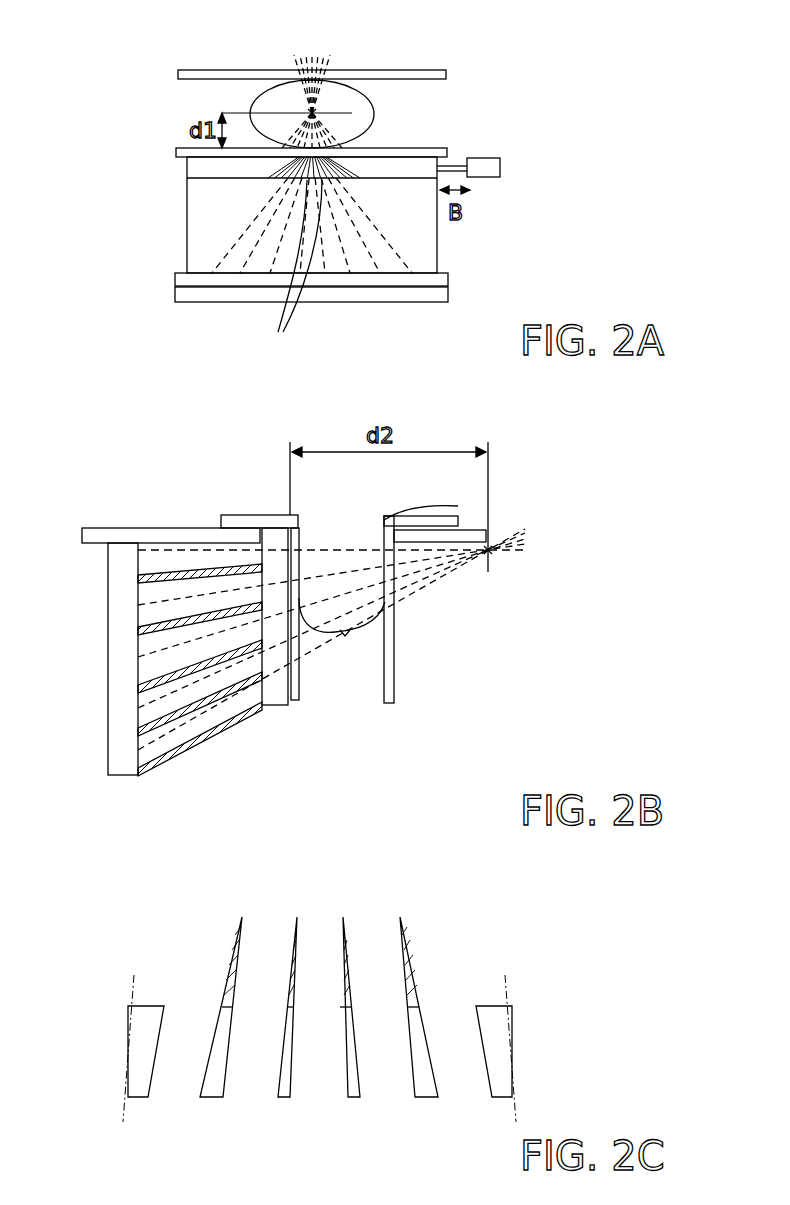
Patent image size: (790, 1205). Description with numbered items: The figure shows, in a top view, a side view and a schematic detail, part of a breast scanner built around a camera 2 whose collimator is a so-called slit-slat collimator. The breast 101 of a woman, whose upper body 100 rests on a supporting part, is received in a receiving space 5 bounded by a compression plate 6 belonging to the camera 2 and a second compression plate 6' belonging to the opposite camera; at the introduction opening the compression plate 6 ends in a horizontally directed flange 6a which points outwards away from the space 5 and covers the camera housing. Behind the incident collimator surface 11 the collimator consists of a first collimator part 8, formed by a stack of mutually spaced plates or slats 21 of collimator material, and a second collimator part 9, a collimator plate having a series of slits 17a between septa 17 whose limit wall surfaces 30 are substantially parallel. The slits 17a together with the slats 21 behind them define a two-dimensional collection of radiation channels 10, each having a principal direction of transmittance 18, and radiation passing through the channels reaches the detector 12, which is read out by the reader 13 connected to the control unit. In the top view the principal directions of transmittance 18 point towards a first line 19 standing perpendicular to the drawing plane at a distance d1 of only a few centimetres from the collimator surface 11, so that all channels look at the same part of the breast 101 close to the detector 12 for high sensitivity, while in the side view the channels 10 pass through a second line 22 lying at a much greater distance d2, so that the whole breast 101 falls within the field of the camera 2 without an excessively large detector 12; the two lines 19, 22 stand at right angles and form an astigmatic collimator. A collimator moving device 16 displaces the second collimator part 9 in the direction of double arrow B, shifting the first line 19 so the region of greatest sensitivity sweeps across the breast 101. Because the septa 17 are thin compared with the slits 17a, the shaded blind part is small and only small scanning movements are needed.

In FIG. 2A, the camera 2 is at (522, 246).
In FIG. 2B, the camera 2 is at (195, 458).
In FIG. 2A, the receiving space 5 is at (400, 125).
In FIG. 2B, the receiving space 5 is at (359, 695).
In FIG. 2A, the compression plate 6 is at (312, 126).
In FIG. 2B, the compression plate 6 is at (299, 653).
In FIG. 2A, the second compression plate 6' is at (333, 57).
In FIG. 2B, the second compression plate 6' is at (435, 642).
In FIG. 2B, the flange 6a is at (258, 525).
In FIG. 2A, the first collimator part 8 is at (200, 232).
In FIG. 2B, the first collimator part 8 is at (284, 690).
In FIG. 2A, the second collimator part 9 is at (200, 167).
In FIG. 2B, the second collimator part 9 is at (272, 697).
In FIG. 2C, the second collimator part 9 is at (138, 1035).
In FIG. 2A, the radiation channels 10 is at (296, 268).
In FIG. 2B, the radiation channels 10 is at (147, 626).
In FIG. 2C, the radiation channels 10 is at (194, 1058).
In FIG. 2A, the incident collimator surface 11 is at (202, 155).
In FIG. 2B, the incident collimator surface 11 is at (298, 655).
In FIG. 2C, the incident collimator surface 11 is at (490, 1006).
In FIG. 2A, the detector 12 is at (180, 280).
In FIG. 2B, the detector 12 is at (120, 778).
In FIG. 2A, the reader 13 is at (190, 295).
In FIG. 2A, the collimator moving device 16 is at (500, 166).
In FIG. 2A, the septa 17 is at (300, 168).
In FIG. 2C, the septa 17 is at (204, 1086).
In FIG. 2C, the slits 17a is at (322, 1078).
In FIG. 2A, the principal direction of transmittance 18 is at (250, 247).
In FIG. 2B, the principal direction of transmittance 18 is at (150, 752).
In FIG. 2A, the first line 19 is at (312, 113).
In FIG. 2B, the plates 21 is at (150, 690).
In FIG. 2B, the second line 22 is at (490, 553).
In FIG. 2C, the limit wall surfaces 30 is at (148, 1088).
In FIG. 2B, the upper body 100 is at (320, 486).
In FIG. 2A, the breast 101 is at (352, 84).
In FIG. 2B, the breast 101 is at (342, 608).